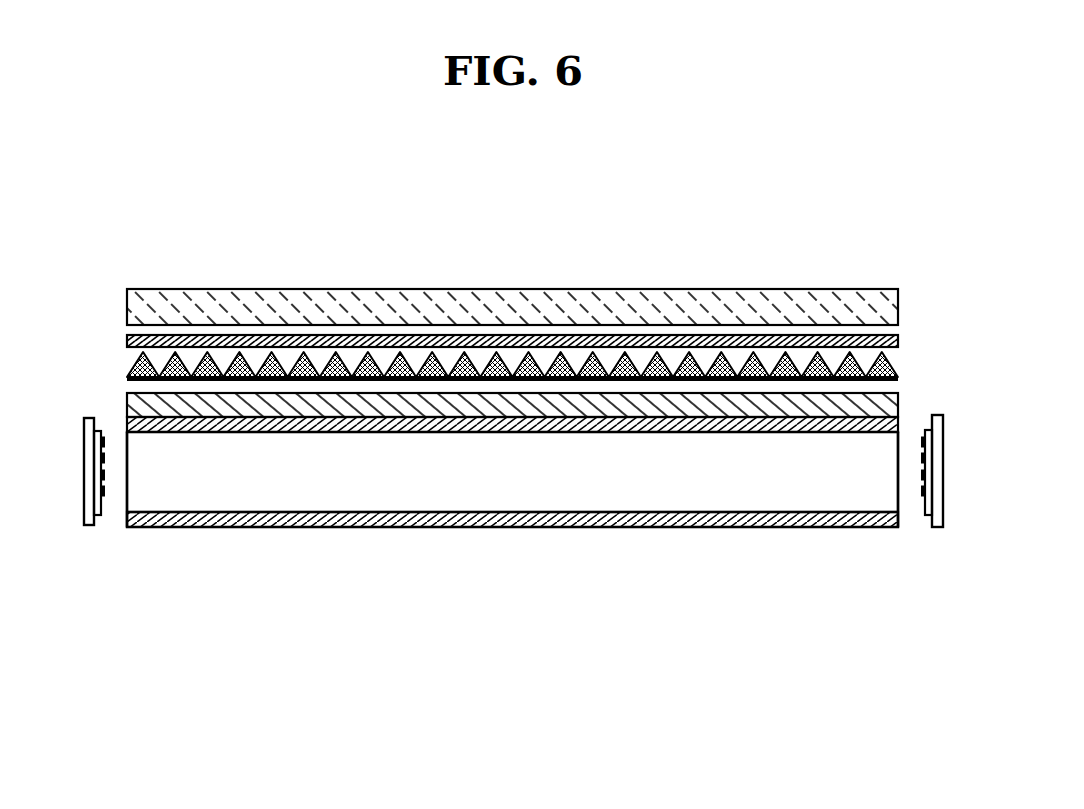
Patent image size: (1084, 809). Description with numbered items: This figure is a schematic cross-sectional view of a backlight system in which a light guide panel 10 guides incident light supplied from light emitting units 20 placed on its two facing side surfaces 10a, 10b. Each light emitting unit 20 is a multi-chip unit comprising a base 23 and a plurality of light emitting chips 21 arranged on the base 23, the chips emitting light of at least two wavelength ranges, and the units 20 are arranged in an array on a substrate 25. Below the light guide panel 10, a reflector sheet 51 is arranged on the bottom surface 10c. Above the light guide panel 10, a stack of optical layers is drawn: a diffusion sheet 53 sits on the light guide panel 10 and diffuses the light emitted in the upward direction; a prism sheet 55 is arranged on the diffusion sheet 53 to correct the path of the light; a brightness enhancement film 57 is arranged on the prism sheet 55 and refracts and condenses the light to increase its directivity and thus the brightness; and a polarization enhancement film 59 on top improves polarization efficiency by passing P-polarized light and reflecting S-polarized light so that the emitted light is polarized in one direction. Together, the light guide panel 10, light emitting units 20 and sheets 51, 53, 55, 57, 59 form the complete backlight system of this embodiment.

The light guide panel 10 is at (533, 539).
The side surface 10a is at (127, 497).
The side surface 10b is at (898, 490).
The bottom surface 10c is at (706, 505).
The light emitting unit 20 is at (90, 571).
The light emitting chips 21 is at (108, 515).
The base 23 is at (97, 515).
The substrate 25 is at (80, 525).
The reflector sheet 51 is at (537, 527).
The diffusion sheet 53 is at (127, 419).
The prism sheet 55 is at (127, 395).
The brightness enhancement film 57 is at (905, 333).
The polarization enhancement film 59 is at (898, 305).